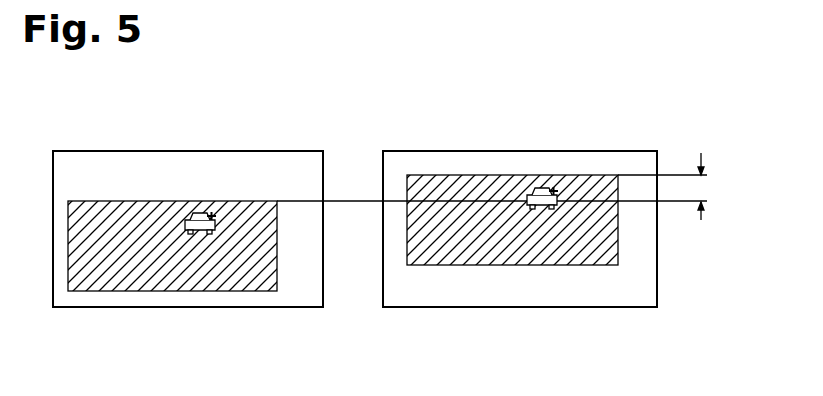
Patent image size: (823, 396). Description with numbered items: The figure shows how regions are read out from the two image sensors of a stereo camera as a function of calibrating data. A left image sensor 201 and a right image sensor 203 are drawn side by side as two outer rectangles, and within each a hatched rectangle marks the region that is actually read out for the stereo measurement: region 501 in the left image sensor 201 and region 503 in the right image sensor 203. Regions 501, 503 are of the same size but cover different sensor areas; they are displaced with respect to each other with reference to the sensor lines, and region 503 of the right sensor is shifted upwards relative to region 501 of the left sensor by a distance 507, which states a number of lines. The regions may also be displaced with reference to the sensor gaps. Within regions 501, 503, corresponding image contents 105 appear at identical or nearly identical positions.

The left image sensor 201 is at (96, 151).
The right image sensor 203 is at (442, 151).
The image content 105 is at (210, 212).
The region 501 is at (177, 291).
The region 503 is at (518, 265).
The distance 507 is at (703, 188).